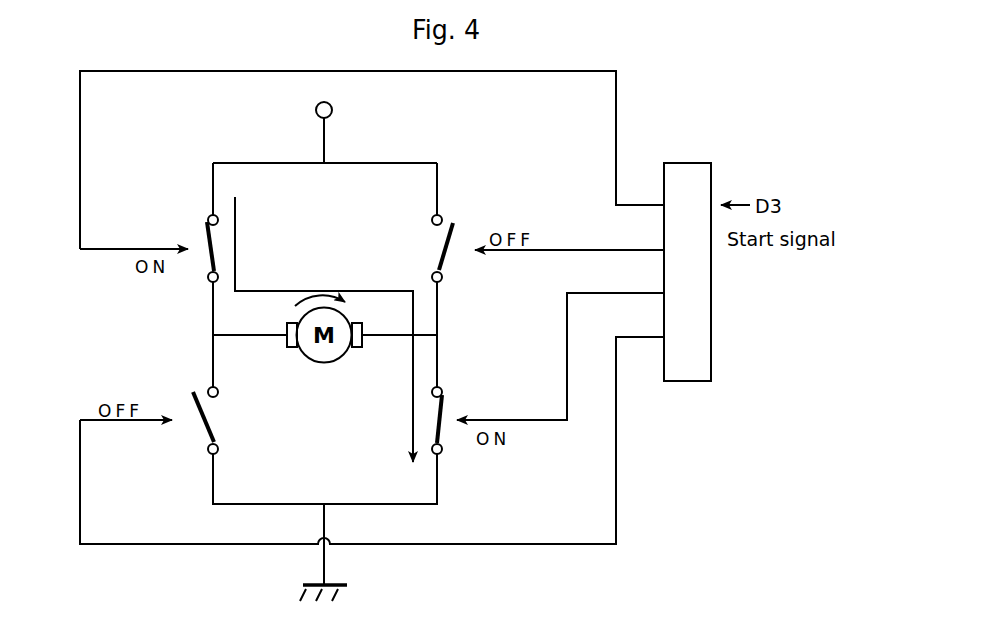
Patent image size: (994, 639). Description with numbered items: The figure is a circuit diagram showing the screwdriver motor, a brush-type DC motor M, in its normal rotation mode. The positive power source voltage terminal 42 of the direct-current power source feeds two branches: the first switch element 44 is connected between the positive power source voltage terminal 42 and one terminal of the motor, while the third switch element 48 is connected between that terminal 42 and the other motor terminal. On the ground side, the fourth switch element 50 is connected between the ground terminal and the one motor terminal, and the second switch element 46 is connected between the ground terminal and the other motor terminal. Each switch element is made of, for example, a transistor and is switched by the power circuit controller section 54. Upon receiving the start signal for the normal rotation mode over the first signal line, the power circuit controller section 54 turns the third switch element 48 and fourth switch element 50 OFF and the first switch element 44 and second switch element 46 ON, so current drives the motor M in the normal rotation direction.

The positive power source voltage terminal 42 is at (333, 110).
The first switch element 44 is at (205, 215).
The second switch element 46 is at (447, 390).
The third switch element 48 is at (444, 215).
The fourth switch element 50 is at (190, 410).
The power circuit controller section 54 is at (690, 163).